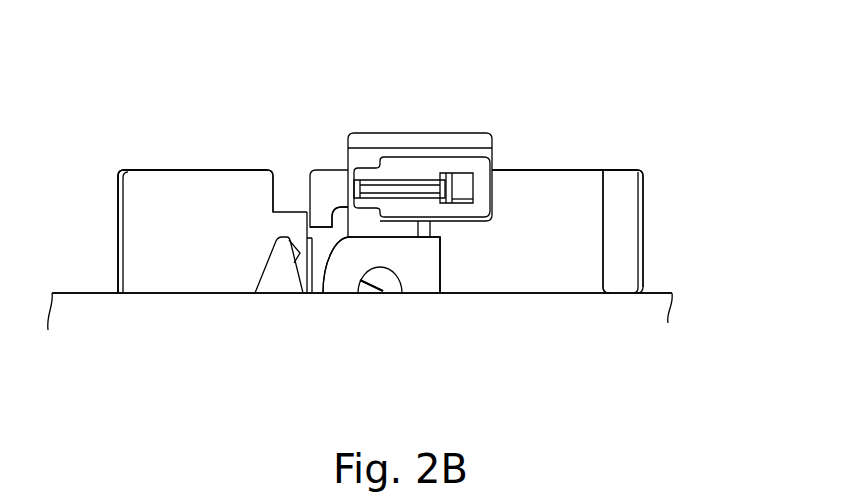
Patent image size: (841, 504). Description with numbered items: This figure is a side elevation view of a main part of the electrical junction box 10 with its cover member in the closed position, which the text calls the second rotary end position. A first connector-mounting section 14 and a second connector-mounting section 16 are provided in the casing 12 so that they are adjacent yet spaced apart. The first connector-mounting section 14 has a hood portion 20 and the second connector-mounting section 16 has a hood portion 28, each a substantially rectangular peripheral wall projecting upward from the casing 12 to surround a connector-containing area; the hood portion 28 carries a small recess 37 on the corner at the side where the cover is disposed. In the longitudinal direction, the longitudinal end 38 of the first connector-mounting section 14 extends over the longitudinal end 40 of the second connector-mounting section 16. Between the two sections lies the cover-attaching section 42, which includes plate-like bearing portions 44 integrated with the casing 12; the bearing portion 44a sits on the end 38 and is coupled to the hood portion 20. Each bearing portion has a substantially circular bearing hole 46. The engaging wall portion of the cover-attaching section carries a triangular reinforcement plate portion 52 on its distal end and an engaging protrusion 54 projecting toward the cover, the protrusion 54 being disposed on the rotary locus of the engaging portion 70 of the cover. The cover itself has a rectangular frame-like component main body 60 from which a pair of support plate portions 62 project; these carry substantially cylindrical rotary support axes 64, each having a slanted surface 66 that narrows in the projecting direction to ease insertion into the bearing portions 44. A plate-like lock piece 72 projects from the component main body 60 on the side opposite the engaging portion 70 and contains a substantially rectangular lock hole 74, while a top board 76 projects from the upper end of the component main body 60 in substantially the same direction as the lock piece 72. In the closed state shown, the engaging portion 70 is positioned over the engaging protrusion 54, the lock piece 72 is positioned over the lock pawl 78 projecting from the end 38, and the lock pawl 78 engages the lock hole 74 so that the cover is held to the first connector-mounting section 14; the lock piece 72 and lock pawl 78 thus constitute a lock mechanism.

The electrical junction box 10 is at (640, 55).
The casing 12 is at (665, 300).
The first connector-mounting section 14 is at (578, 135).
The second connector-mounting section 16 is at (170, 138).
The hood portion 20 is at (564, 231).
The hood portion 28 is at (192, 231).
The recess 37 is at (273, 203).
The longitudinal end 38 is at (573, 187).
The longitudinal end 40 is at (155, 187).
The cover-attaching section 42 is at (428, 300).
The bearing portion 44 is at (381, 257).
The bearing portion 44a is at (425, 268).
The bearing hole 46 is at (392, 283).
The triangular reinforcement plate portion 52 is at (272, 277).
The engaging protrusion 54 is at (293, 256).
The component main body 60 is at (350, 192).
The support plate portion 62 is at (375, 228).
The rotary support axis 64 is at (387, 278).
The slanted surface 66 is at (368, 293).
The engaging portion 70 is at (323, 245).
The lock piece 72 is at (400, 167).
The lock hole 74 is at (472, 200).
The top board 76 is at (435, 142).
The lock pawl 78 is at (462, 178).